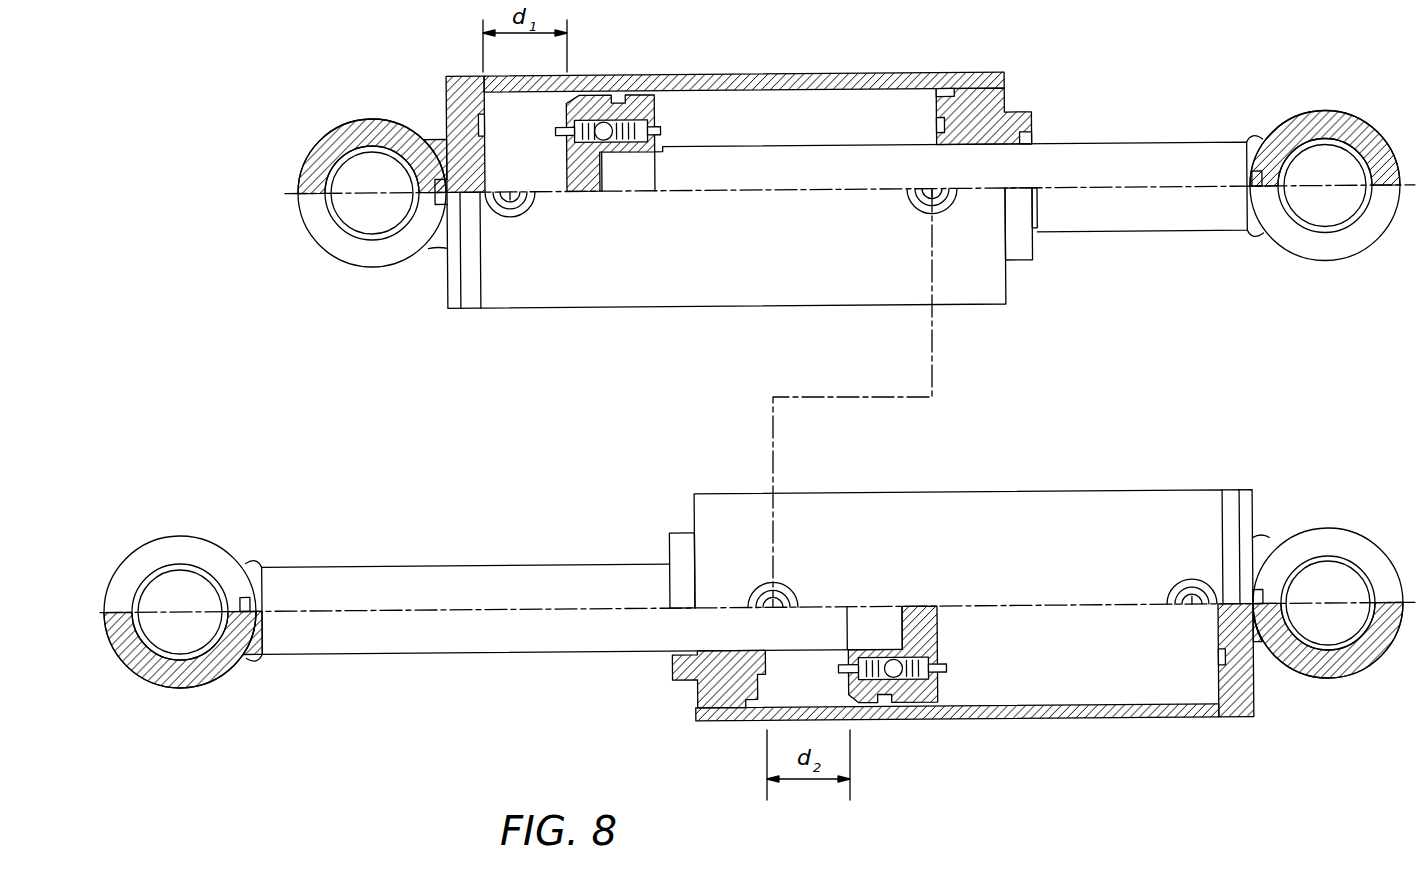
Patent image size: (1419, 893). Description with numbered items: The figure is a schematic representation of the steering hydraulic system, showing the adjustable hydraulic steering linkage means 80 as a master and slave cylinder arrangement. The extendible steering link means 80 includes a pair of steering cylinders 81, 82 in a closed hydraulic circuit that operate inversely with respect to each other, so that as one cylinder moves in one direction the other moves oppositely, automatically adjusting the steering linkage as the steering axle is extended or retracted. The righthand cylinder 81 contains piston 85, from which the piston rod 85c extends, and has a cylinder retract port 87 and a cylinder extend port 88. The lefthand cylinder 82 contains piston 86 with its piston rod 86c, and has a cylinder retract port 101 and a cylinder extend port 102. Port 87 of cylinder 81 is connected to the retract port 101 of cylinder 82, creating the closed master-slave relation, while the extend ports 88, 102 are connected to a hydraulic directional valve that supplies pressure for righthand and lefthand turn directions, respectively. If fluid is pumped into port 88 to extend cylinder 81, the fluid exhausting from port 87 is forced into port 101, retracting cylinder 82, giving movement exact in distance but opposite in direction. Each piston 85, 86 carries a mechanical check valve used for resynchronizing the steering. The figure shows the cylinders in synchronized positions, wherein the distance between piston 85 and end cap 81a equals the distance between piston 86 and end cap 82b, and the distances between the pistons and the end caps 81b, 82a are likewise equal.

The adjustable hydraulic steering linkage means 80 is at (325, 122).
The righthand steering cylinder 81 is at (764, 78).
The end cap of cylinder 81 81a is at (453, 98).
The end cap of cylinder 81 81b is at (1000, 101).
The lefthand steering cylinder 82 is at (990, 503).
The end cap of cylinder 82 82a is at (1245, 687).
The end cap of cylinder 82 82b is at (697, 692).
The piston 85 is at (597, 95).
The first piston rod 85c is at (1128, 160).
The piston 86 is at (906, 702).
The second piston rod 86c is at (437, 578).
The cylinder retract port 87 is at (935, 211).
The cylinder extend port 88 is at (506, 203).
The cylinder retract port 101 is at (775, 597).
The cylinder extend port 102 is at (1191, 596).